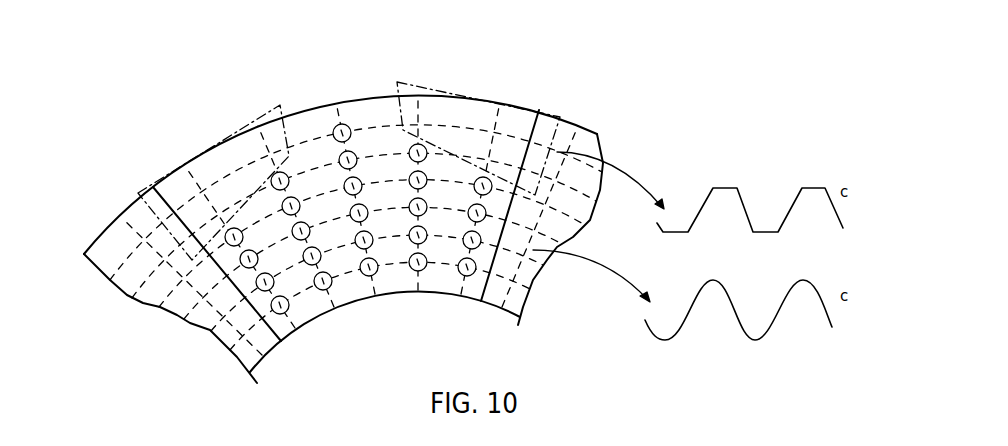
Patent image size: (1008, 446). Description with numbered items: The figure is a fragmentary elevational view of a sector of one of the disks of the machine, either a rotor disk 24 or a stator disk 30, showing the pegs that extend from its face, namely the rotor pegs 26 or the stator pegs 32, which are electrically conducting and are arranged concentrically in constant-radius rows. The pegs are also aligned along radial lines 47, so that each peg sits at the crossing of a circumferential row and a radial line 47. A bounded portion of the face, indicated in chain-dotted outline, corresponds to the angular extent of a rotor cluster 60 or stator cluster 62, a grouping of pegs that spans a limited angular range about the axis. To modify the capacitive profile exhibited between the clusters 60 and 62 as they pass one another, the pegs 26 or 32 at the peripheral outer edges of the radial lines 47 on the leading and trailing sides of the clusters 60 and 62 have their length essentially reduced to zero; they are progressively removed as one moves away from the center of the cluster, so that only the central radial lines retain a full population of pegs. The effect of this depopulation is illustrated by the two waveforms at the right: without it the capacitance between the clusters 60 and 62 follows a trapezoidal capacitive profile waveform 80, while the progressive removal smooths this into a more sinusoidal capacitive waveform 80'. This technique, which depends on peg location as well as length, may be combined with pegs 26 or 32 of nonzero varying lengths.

The rotor disk 24 is at (316, 238).
The stator disk 30 is at (113, 224).
The rotor pegs 26 is at (358, 173).
The stator pegs 32 is at (347, 124).
The radial lines 47 is at (324, 290).
The rotor clusters 60 is at (349, 162).
The stator clusters 62 is at (291, 92).
The trapezoidal capacitive profile waveform 80 is at (750, 179).
The sinusoidal capacitive waveform 80' is at (738, 280).